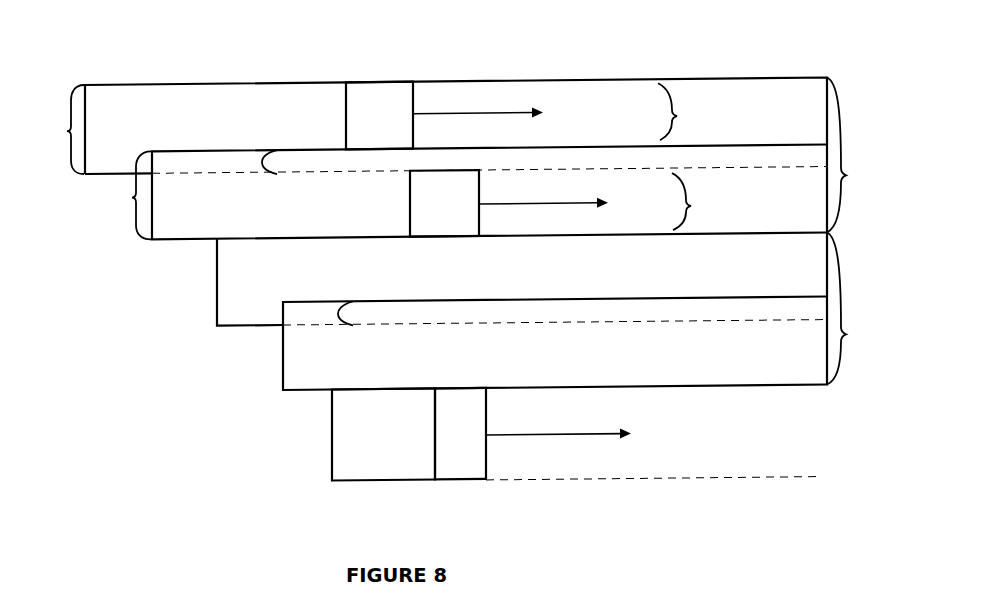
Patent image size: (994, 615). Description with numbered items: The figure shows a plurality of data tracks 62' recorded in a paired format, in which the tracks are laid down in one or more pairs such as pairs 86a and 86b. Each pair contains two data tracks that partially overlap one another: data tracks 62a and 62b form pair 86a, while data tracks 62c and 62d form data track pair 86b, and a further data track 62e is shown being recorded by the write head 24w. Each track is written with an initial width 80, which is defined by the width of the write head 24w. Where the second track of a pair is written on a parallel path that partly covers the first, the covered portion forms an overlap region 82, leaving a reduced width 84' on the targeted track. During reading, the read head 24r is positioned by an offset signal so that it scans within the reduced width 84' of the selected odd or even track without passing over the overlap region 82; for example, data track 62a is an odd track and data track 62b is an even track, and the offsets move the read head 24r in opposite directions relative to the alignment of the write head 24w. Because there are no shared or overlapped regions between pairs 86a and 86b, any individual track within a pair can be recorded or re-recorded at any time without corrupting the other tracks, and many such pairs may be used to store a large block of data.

The plurality of data tracks 62' is at (97, 24).
The data track 62a is at (456, 126).
The data track 62b is at (489, 192).
The data track 62c is at (522, 279).
The data track 62d is at (555, 343).
The data track 62e is at (383, 434).
The read head 24r is at (477, 159).
The write head 24w is at (627, 433).
The initial width 80 is at (67, 131).
The overlap region 82 is at (262, 166).
The reduced width 84' is at (692, 157).
The data track pair 86a is at (846, 183).
The data track pair 86b is at (846, 342).